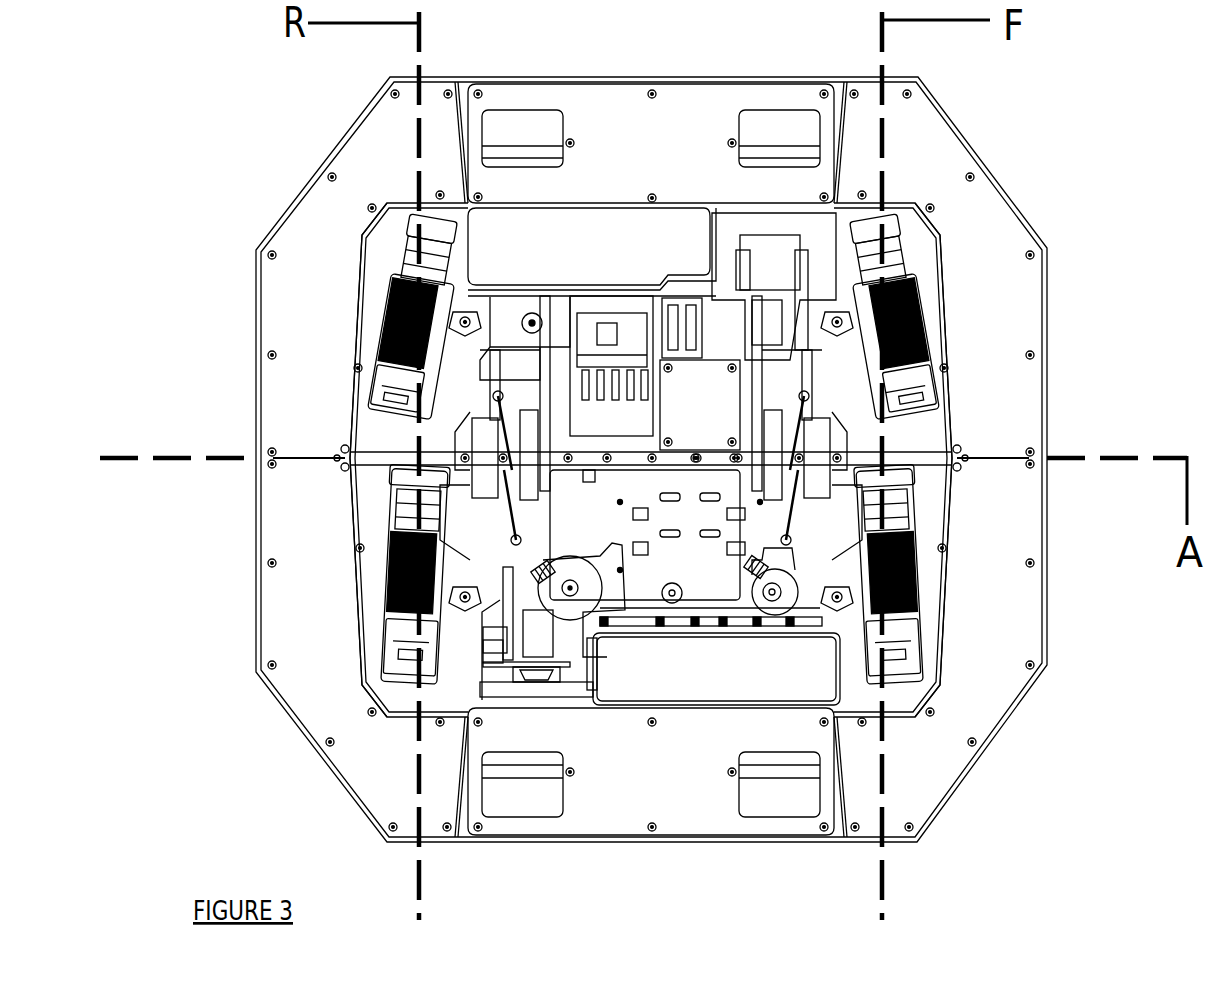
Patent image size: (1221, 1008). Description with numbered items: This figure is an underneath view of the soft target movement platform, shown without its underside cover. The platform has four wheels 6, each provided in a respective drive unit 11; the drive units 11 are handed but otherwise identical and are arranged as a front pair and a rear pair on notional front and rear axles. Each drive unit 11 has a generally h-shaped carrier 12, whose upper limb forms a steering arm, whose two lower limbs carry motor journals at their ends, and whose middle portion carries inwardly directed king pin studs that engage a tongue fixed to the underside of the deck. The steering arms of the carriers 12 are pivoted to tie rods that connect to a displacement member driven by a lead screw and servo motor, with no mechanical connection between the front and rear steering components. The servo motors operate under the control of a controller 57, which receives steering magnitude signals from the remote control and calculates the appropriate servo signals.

The wheel 6 is at (893, 225).
The drive unit 11 is at (367, 603).
The carrier 12 is at (463, 378).
The controller 57 is at (733, 610).